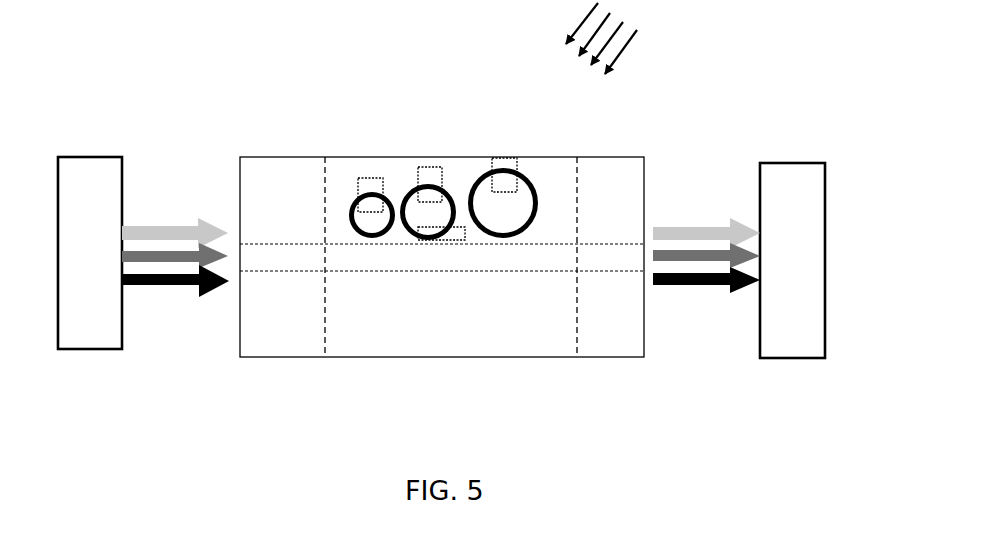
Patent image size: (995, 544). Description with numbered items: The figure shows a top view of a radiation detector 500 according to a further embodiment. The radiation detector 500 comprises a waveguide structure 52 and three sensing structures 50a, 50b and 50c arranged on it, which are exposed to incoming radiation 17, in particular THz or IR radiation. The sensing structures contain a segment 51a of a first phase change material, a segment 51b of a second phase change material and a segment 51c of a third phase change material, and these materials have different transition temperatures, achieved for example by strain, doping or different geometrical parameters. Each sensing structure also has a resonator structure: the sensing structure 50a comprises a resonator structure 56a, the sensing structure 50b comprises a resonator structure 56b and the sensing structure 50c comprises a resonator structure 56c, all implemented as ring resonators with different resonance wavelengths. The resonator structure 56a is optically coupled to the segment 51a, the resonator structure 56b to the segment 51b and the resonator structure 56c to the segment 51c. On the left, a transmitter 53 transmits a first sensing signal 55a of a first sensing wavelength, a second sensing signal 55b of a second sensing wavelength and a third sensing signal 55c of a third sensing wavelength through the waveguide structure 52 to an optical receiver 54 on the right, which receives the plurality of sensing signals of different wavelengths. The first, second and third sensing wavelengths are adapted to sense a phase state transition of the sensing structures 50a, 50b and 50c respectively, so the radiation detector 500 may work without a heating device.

The radiation detector 500 is at (830, 479).
The radiation 17 is at (638, 33).
The first sensing structure 50a is at (374, 147).
The second sensing structure 50b is at (452, 158).
The third sensing structure 50c is at (533, 148).
The segment of first phase change material 51a is at (367, 183).
The segment of second phase change material 51b is at (435, 176).
The segment of third phase change material 51c is at (502, 166).
The waveguide structure 52 is at (593, 260).
The transmitter 53 is at (100, 168).
The optical receiver 54 is at (797, 176).
The first sensing signal 55a is at (162, 233).
The second sensing signal 55b is at (227, 255).
The third sensing signal 55c is at (155, 287).
The resonator structure 56a is at (350, 216).
The resonator structure 56b is at (427, 241).
The resonator structure 56c is at (533, 222).